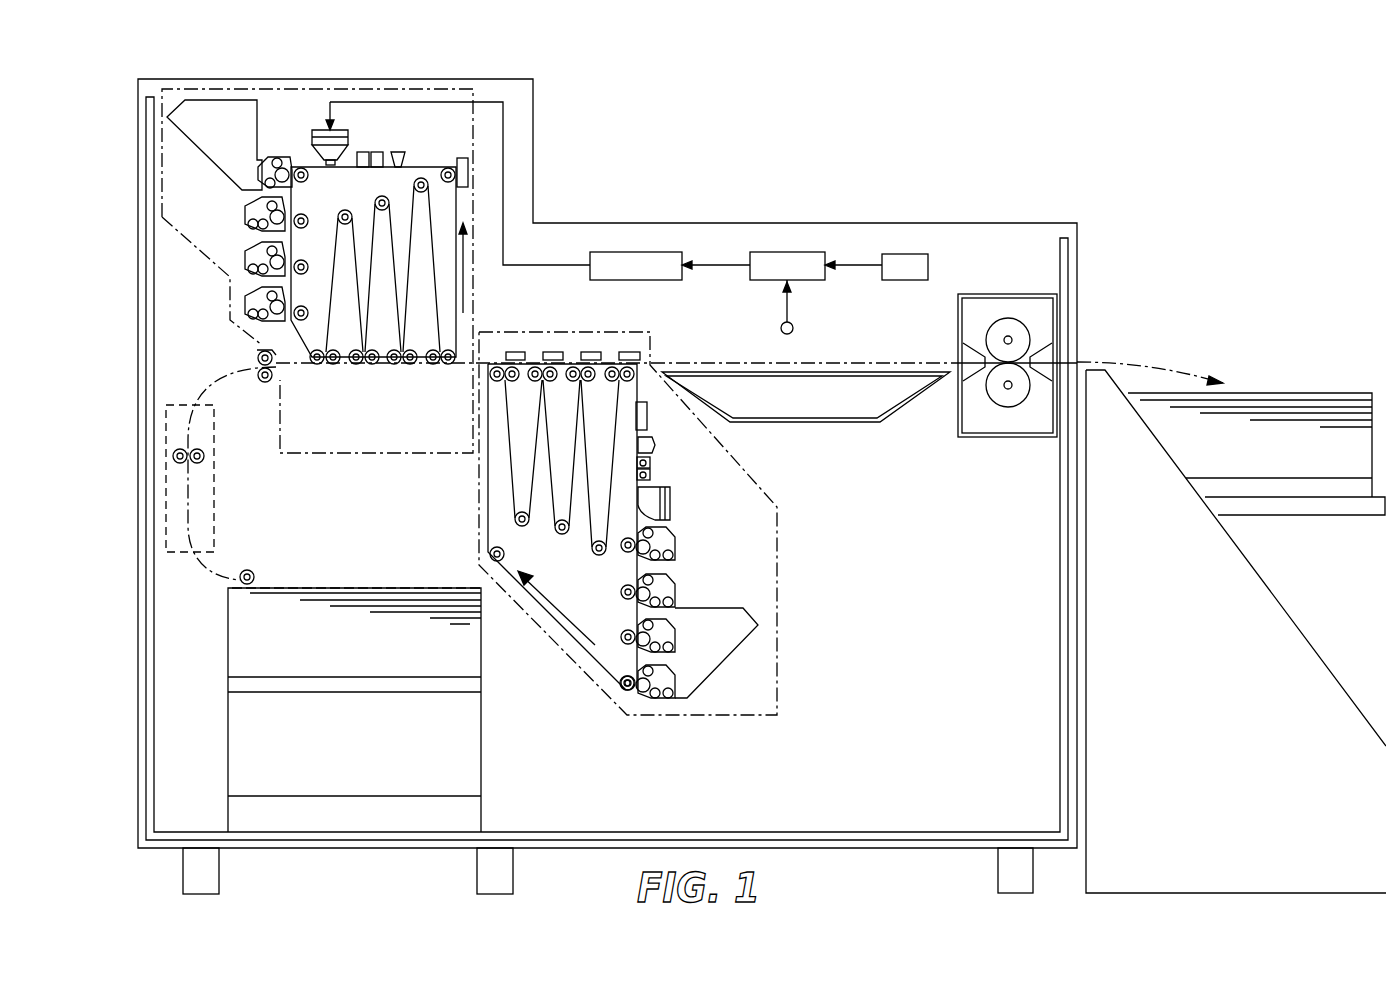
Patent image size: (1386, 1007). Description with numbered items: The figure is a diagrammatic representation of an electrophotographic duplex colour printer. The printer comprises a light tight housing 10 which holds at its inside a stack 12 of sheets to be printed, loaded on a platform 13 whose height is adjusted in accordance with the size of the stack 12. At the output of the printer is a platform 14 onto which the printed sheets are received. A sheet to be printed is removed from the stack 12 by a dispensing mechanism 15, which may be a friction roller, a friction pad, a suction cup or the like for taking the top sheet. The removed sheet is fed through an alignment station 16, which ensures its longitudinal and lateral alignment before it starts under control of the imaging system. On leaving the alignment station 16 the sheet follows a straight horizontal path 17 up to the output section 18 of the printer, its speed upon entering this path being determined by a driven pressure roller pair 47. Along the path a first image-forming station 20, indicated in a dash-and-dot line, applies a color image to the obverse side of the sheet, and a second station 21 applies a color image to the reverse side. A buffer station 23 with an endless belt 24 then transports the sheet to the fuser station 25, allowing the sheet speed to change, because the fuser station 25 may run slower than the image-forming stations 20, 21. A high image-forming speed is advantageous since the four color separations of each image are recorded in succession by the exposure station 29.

The light tight housing 10 is at (711, 220).
The stack of sheets 12 is at (267, 642).
The platform 13 is at (247, 688).
The platform 14 is at (1313, 505).
The dispensing mechanism 15 is at (255, 577).
The alignment station 16 is at (167, 455).
The straight horizontal path 17 is at (290, 367).
The output section 18 is at (1078, 353).
The first image-forming station 20 is at (228, 88).
The second station 21 is at (777, 703).
The buffer station 23 is at (771, 403).
The endless belt 24 is at (880, 420).
The fuser station 25 is at (957, 405).
The exposure station 29 is at (329, 100).
The driven pressure roller pair 47 is at (256, 356).